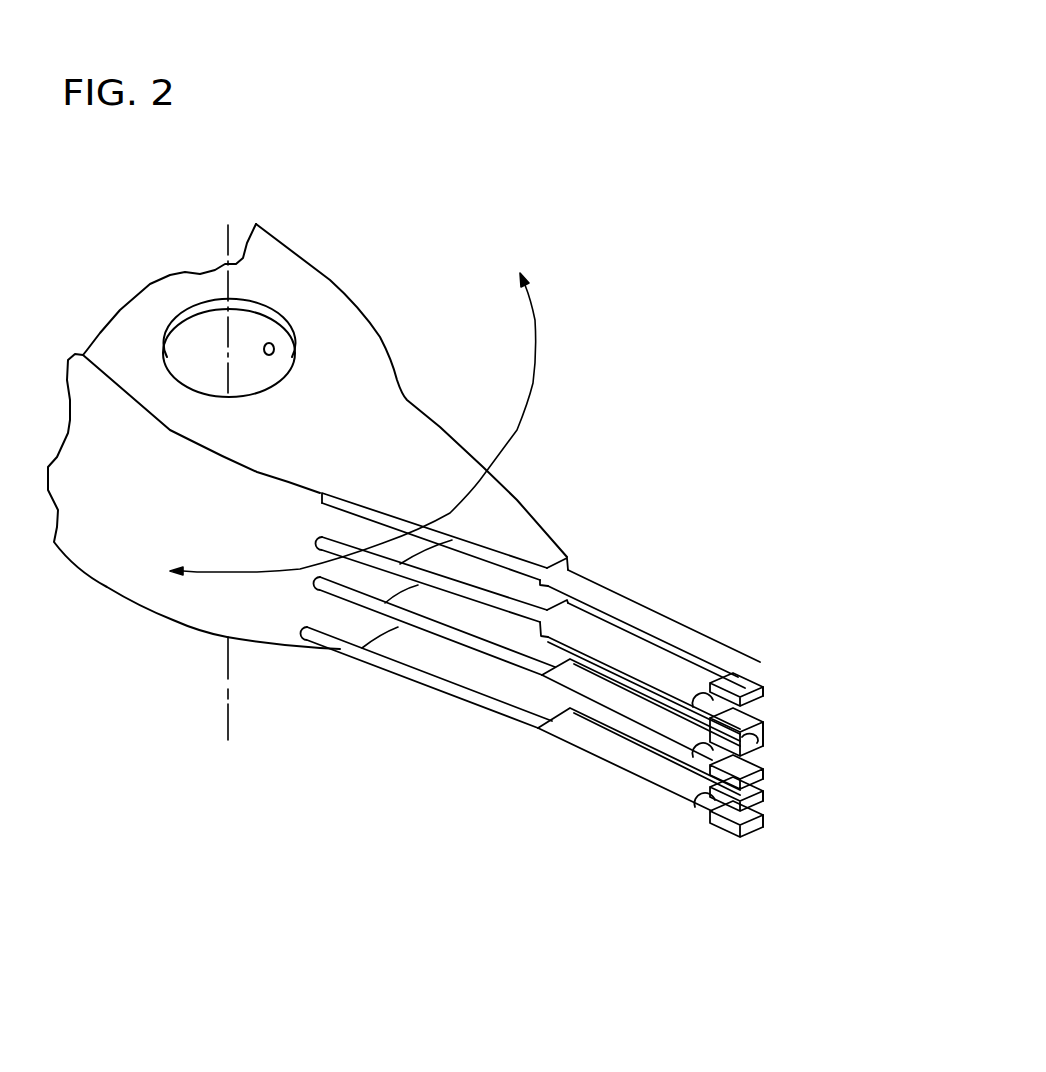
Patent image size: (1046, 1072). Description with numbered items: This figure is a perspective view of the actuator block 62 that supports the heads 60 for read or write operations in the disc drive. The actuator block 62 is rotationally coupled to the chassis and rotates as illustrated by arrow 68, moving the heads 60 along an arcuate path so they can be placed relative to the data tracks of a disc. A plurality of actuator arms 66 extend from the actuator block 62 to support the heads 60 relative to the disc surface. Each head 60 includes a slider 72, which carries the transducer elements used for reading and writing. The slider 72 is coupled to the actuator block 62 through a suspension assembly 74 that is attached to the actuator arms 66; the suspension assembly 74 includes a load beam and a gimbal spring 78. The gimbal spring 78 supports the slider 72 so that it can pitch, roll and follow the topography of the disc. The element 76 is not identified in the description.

The heads 60 is at (747, 701).
The actuator block 62 is at (343, 357).
The actuator arms 66 is at (420, 653).
The arrow 68 is at (530, 402).
The slider 72 is at (776, 715).
The suspension assembly 74 is at (645, 737).
The flat plate portions 76 is at (593, 690).
The gimbal spring 78 is at (696, 726).